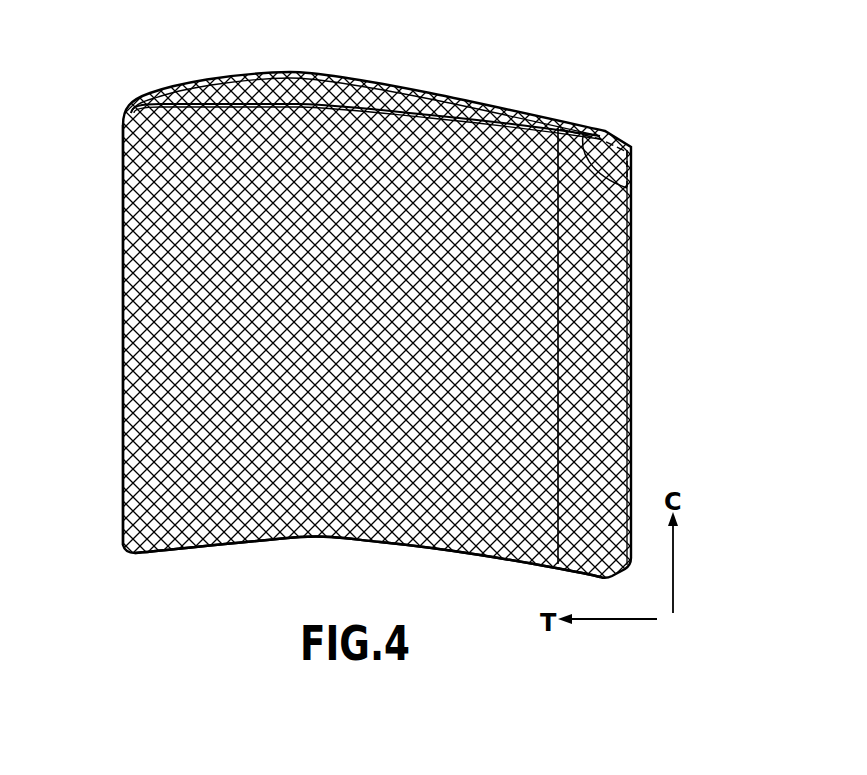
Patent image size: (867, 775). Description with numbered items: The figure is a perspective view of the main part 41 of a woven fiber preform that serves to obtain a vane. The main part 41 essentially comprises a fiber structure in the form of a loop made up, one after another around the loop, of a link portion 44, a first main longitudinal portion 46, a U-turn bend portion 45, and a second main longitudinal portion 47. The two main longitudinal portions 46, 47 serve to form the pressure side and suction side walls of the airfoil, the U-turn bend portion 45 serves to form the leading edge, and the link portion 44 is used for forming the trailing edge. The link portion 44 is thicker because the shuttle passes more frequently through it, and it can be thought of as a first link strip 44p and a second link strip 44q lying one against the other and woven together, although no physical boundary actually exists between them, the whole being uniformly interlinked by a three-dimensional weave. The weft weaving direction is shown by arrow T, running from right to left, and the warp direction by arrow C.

The main part 41 is at (463, 83).
The link portion 44 is at (600, 330).
The first link strip 44p is at (627, 190).
The second link strip 44q is at (584, 132).
The U-turn bend portion 45 is at (123, 309).
The first main longitudinal portion 46 is at (336, 523).
The second main longitudinal portion 47 is at (360, 83).